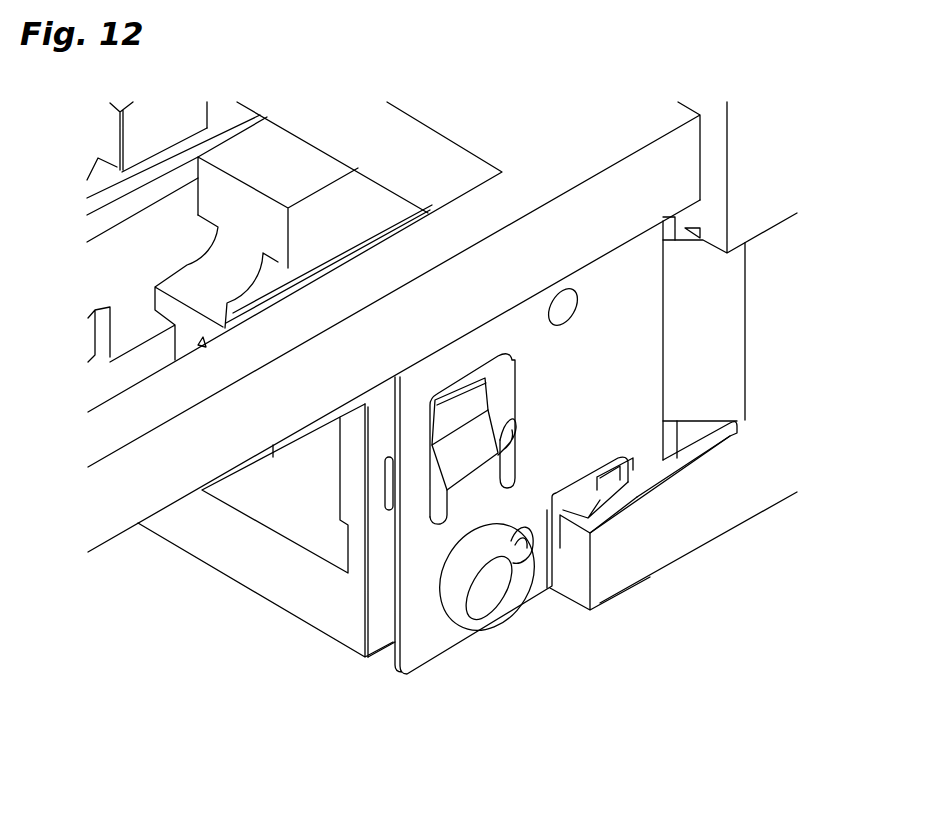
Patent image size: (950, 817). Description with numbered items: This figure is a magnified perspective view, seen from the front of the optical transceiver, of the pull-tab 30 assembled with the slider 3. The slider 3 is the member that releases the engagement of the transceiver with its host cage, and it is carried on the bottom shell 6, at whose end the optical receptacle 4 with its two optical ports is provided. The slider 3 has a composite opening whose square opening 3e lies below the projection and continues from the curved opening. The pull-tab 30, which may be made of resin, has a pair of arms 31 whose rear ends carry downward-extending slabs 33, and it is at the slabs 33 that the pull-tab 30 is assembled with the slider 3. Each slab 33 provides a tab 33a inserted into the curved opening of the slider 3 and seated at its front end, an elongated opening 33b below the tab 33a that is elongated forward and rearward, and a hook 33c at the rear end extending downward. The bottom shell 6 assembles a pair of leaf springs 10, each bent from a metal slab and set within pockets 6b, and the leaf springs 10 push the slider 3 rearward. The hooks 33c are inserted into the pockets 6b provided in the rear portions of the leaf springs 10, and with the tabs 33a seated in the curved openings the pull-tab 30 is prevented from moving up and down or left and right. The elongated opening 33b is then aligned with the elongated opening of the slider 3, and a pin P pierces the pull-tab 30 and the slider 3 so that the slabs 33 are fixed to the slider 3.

The slider 3 is at (767, 373).
The square opening 3e is at (520, 407).
The optical receptacle 4 is at (277, 562).
The bottom shell 6 is at (725, 537).
The pockets 6b is at (672, 443).
The leaf springs 10 is at (607, 457).
The pull-tab 30 is at (113, 540).
The arms 31 is at (173, 457).
The slabs 33 is at (390, 657).
The tabs 33a is at (458, 410).
The elongated openings 33b is at (520, 545).
The hooks 33c is at (643, 460).
The pins P is at (485, 595).